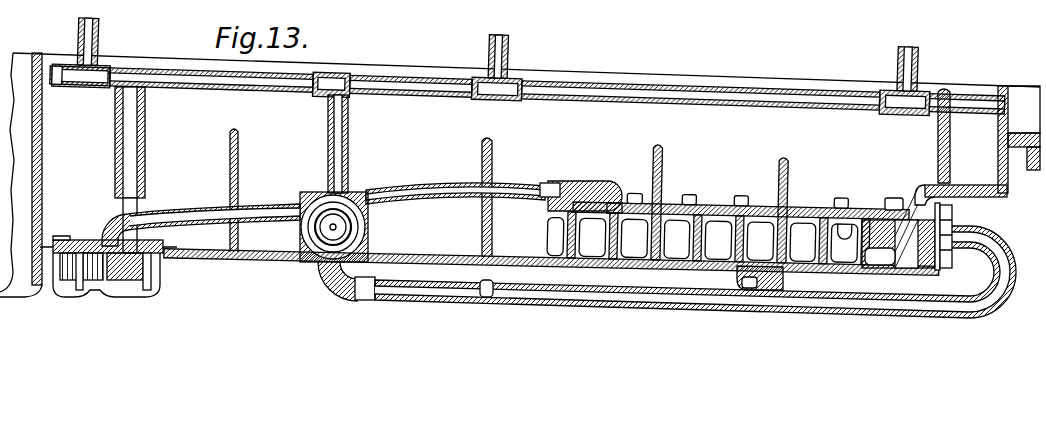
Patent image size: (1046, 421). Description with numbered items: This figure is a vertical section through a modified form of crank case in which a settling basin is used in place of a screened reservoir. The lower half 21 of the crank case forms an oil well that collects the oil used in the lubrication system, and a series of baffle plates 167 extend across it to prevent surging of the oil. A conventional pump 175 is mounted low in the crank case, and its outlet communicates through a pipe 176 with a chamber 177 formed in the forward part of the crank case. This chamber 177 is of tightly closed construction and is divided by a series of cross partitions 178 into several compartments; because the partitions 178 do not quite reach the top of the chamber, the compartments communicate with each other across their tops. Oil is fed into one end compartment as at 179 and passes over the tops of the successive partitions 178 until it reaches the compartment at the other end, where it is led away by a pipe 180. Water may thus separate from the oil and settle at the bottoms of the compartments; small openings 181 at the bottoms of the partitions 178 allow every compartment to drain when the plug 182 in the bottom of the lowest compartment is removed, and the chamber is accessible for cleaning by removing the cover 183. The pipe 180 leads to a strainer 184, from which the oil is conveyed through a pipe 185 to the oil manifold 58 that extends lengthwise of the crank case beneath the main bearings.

The lower half of crank case 21 is at (527, 90).
The oil manifold 58 is at (291, 82).
The baffle plates 167 is at (238, 176).
The pump 175 is at (160, 282).
The pipe 176 is at (187, 222).
The chamber 177 is at (703, 208).
The cross partitions 178 is at (719, 199).
The oil feed point 179 is at (612, 184).
The pipe 180 is at (1000, 311).
The small openings 181 is at (550, 270).
The plug 182 is at (784, 284).
The cover 183 is at (741, 186).
The strainer 184 is at (367, 228).
The pipe 185 is at (343, 167).